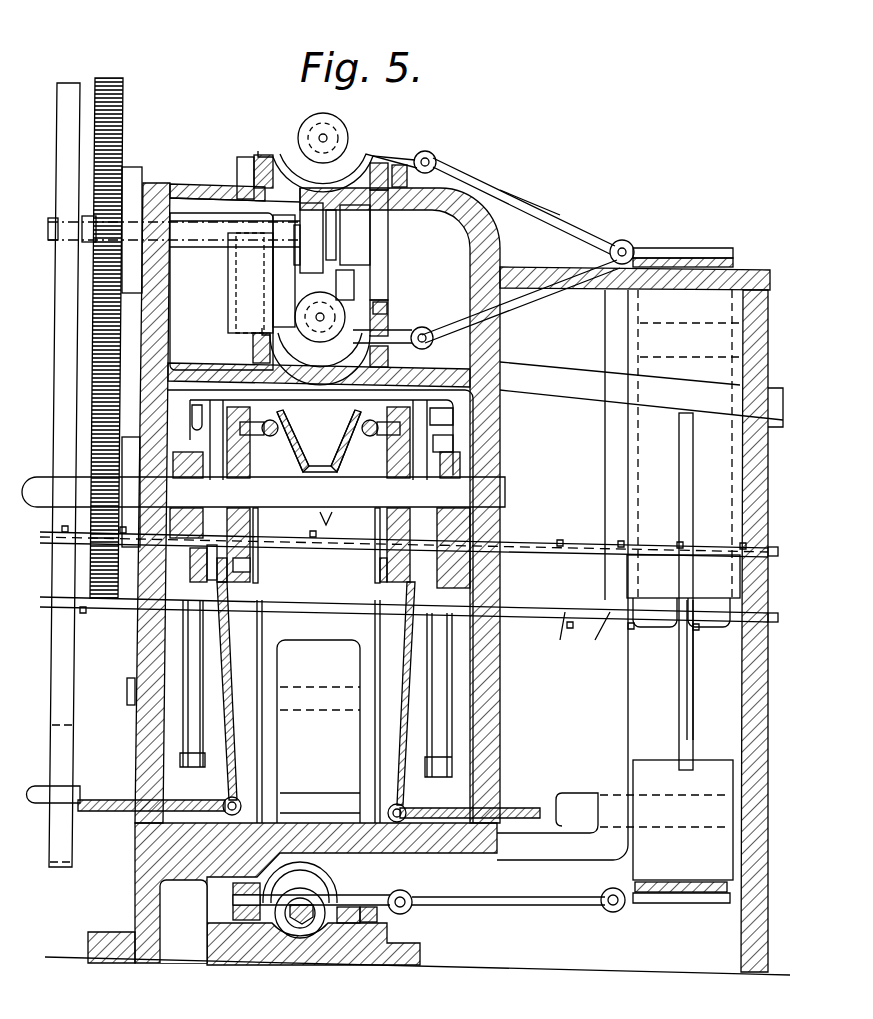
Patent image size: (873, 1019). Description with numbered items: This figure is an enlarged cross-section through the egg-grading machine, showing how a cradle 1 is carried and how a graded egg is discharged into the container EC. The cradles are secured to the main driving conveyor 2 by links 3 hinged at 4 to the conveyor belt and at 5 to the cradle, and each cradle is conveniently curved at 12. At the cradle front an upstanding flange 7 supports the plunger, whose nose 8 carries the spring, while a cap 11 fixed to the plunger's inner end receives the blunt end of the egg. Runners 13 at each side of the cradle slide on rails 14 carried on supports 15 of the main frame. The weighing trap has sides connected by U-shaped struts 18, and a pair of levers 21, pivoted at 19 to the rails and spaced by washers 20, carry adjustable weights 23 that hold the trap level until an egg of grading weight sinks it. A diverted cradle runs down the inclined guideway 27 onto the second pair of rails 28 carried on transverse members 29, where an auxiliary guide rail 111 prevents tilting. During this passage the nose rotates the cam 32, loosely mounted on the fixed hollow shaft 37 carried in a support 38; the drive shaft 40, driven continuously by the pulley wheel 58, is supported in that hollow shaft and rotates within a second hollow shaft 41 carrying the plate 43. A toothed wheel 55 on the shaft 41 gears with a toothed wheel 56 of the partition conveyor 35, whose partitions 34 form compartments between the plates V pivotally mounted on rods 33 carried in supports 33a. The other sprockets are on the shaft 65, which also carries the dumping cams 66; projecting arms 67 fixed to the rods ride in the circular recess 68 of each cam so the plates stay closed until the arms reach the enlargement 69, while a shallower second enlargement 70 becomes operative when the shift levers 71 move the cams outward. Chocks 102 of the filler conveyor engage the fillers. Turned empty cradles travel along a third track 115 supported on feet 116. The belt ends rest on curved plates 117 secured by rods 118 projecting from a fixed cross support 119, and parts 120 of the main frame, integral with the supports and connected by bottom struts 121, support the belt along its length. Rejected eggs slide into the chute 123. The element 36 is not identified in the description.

The cradle 1 is at (380, 160).
The main driving conveyor 2 is at (695, 260).
The link 3 is at (580, 228).
The hinge 4 is at (635, 245).
The hinge 5 is at (470, 165).
The upstanding flange 7 is at (345, 140).
The nose 8 is at (310, 920).
The cap 11 is at (335, 118).
The curved portion 12 is at (285, 160).
The runners 13 is at (290, 160).
The rails 14 is at (300, 150).
The supports 15 is at (172, 182).
The U-shaped struts 18 is at (545, 205).
The pivot 19 is at (227, 176).
The washers 20 is at (210, 250).
The levers 21 is at (240, 158).
The adjustable weights 23 is at (455, 262).
The inclined guideway 27 is at (440, 235).
The second pair of rails 28 is at (280, 320).
The transverse members 29 is at (205, 362).
The cam 32 is at (318, 268).
The rods 33 is at (315, 494).
The supports 33a is at (280, 660).
The partitions 34 is at (319, 441).
The partition conveyor 35 is at (460, 447).
The rod 36 is at (545, 610).
The fixed hollow shaft 37 is at (350, 289).
The support 38 is at (385, 260).
The drive shaft 40 is at (118, 210).
The second hollow shaft 41 is at (190, 270).
The plate 43 is at (265, 271).
The toothed wheel 55 is at (115, 95).
The toothed wheel 56 is at (104, 621).
The pulley wheel 58 is at (66, 95).
The shaft 65 is at (500, 508).
The dumping cams 66 is at (380, 590).
The projecting arms 67 is at (328, 412).
The circular recess 68 is at (380, 565).
The enlargement 69 is at (470, 403).
The second enlargement 70 is at (215, 580).
The shift levers 71 is at (240, 740).
The chocks 102 is at (600, 540).
The auxiliary guide rail 111 is at (390, 305).
The third track 115 is at (380, 912).
The feet 116 is at (405, 965).
The curved plates 117 is at (713, 589).
The rods 118 is at (678, 470).
The fixed cross support 119 is at (683, 717).
The parts of the main frame 120 is at (740, 280).
The bottom struts 121 is at (560, 372).
The chute 123 is at (710, 380).